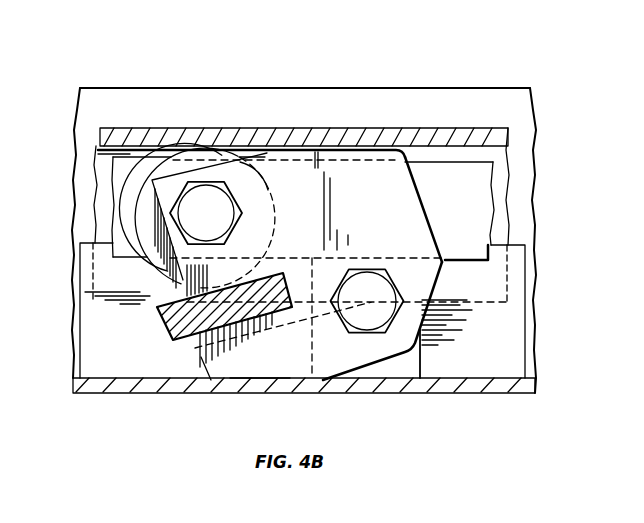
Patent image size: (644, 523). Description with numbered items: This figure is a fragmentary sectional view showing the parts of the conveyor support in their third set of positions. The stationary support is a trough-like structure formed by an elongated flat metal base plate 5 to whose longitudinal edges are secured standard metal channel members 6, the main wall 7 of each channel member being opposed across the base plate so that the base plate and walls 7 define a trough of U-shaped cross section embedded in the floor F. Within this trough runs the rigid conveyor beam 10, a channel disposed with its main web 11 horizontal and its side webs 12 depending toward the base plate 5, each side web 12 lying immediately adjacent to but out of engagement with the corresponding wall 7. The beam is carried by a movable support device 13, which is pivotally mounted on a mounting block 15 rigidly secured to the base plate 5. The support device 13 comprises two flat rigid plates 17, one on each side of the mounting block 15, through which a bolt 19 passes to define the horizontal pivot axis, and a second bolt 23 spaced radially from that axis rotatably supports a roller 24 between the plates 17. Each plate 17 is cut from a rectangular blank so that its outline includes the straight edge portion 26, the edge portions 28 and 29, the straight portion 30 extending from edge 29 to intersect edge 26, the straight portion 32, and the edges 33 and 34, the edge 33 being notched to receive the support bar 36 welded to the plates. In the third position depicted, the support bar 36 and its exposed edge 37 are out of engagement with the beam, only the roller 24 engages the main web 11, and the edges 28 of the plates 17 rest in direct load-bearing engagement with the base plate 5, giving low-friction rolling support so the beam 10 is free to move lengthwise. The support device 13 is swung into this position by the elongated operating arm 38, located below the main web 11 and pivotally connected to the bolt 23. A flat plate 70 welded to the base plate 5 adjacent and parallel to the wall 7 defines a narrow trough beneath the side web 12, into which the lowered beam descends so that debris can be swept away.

The floor F is at (467, 90).
The base plate 5 is at (472, 392).
The channel members 6 is at (544, 137).
The main wall 7 is at (522, 192).
The conveyor beam 10 is at (134, 120).
The main web 11 is at (153, 128).
The side webs 12 is at (498, 234).
The support device 13 is at (140, 282).
The mounting block 15 is at (401, 368).
The plate 17 is at (368, 215).
The bolt 19 is at (389, 316).
The second bolt 23 is at (206, 223).
The roller 24 is at (240, 150).
The straight edge portion 26 is at (430, 302).
The straight edge portion 28 is at (256, 380).
The straight edge portion 29 is at (378, 152).
The straight portion 30 is at (428, 222).
The straight portion 32 is at (375, 366).
The straight edge 33 is at (203, 356).
The straight edge 34 is at (268, 188).
The support bar 36 is at (181, 345).
The exposed edge 37 is at (175, 330).
The operating arm 38 is at (468, 199).
The plate 70 is at (497, 367).